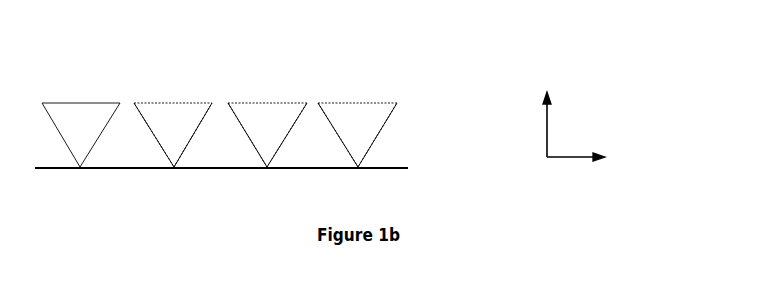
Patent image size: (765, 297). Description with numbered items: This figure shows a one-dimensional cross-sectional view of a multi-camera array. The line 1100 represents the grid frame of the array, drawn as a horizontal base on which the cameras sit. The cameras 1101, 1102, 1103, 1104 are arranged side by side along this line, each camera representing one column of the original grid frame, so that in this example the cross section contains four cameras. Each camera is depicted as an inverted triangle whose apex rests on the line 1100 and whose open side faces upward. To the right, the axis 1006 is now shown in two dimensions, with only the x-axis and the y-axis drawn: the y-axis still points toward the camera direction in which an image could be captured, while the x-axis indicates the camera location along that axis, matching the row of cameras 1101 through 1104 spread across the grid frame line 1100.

The line 1100 is at (252, 167).
The camera 1101 is at (80, 117).
The camera 1102 is at (174, 117).
The camera 1103 is at (270, 113).
The camera 1104 is at (359, 120).
The axis 1006 is at (599, 110).